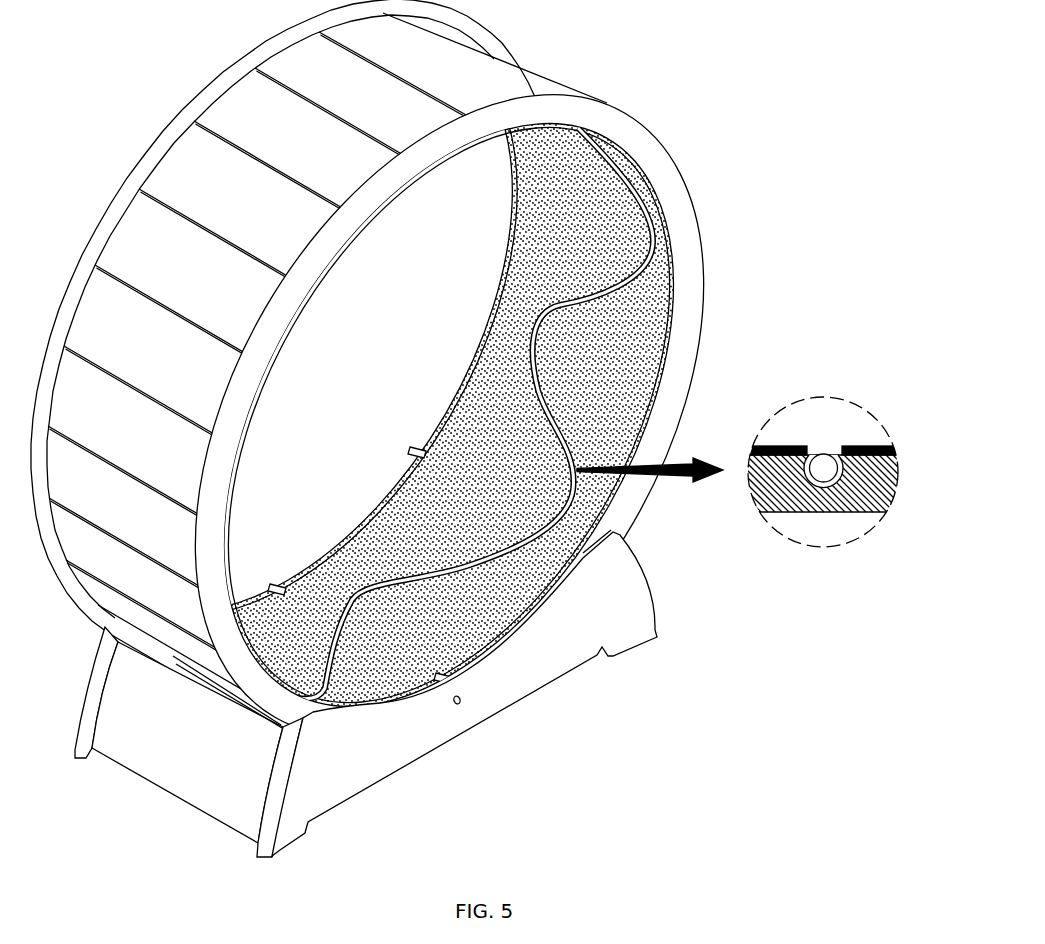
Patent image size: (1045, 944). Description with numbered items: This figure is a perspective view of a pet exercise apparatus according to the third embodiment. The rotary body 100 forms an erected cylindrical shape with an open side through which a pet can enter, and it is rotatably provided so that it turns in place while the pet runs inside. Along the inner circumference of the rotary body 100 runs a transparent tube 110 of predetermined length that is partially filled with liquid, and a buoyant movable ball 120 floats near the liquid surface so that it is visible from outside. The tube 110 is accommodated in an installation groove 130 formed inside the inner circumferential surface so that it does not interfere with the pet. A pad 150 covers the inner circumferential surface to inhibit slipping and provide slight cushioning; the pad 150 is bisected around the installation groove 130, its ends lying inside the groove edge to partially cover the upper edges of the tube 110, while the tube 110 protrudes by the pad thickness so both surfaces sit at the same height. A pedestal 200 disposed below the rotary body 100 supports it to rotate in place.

The rotary body 100 is at (186, 162).
The tube 110 is at (825, 445).
The movable ball 120 is at (515, 345).
The installation groove 130 is at (878, 443).
The pad 150 is at (645, 297).
The pedestal 200 is at (383, 765).